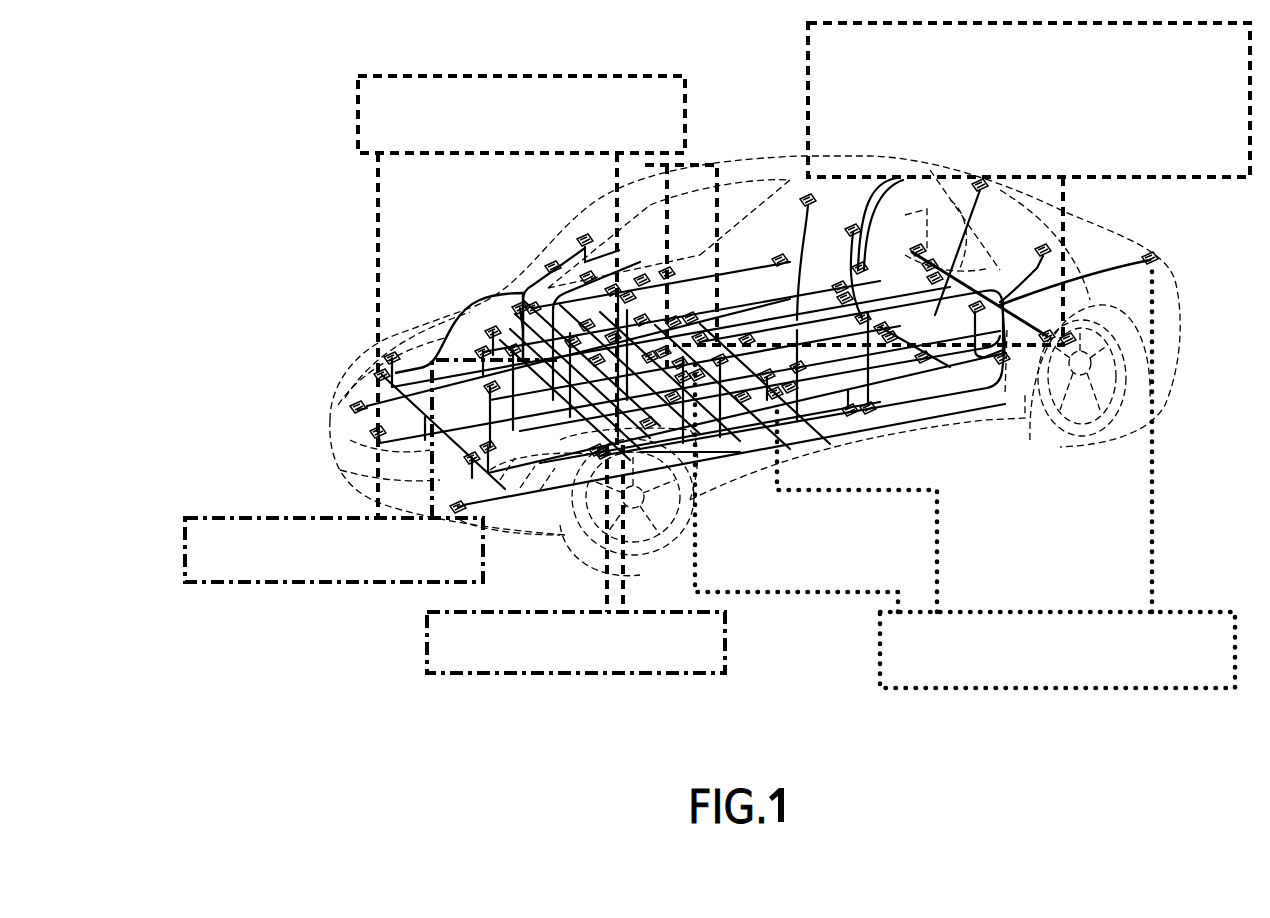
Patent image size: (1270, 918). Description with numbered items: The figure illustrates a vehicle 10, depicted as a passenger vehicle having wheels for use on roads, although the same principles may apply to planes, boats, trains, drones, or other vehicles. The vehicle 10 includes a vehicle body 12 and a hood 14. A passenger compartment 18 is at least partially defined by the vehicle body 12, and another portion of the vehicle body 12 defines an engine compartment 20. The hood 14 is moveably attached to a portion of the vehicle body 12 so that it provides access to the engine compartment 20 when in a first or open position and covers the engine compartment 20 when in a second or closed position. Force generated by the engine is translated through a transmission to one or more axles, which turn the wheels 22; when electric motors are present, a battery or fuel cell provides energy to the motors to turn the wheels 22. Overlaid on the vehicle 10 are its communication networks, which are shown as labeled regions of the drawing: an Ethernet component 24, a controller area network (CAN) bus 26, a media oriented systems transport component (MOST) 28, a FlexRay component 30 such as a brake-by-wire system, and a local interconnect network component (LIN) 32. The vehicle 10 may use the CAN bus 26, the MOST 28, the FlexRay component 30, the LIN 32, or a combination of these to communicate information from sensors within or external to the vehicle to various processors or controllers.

The vehicle 10 is at (150, 160).
The vehicle body 12 is at (735, 296).
The hood 14 is at (462, 295).
The passenger compartment 18 is at (625, 237).
The engine compartment 20 is at (311, 362).
The wheels 22 is at (575, 508).
The Ethernet component 24 is at (153, 551).
The controller area network (CAN) bus 26 is at (332, 111).
The media oriented systems transport component (MOST) 28 is at (793, 93).
The FlexRay component 30 is at (386, 644).
The local interconnect network component (LIN) 32 is at (853, 644).